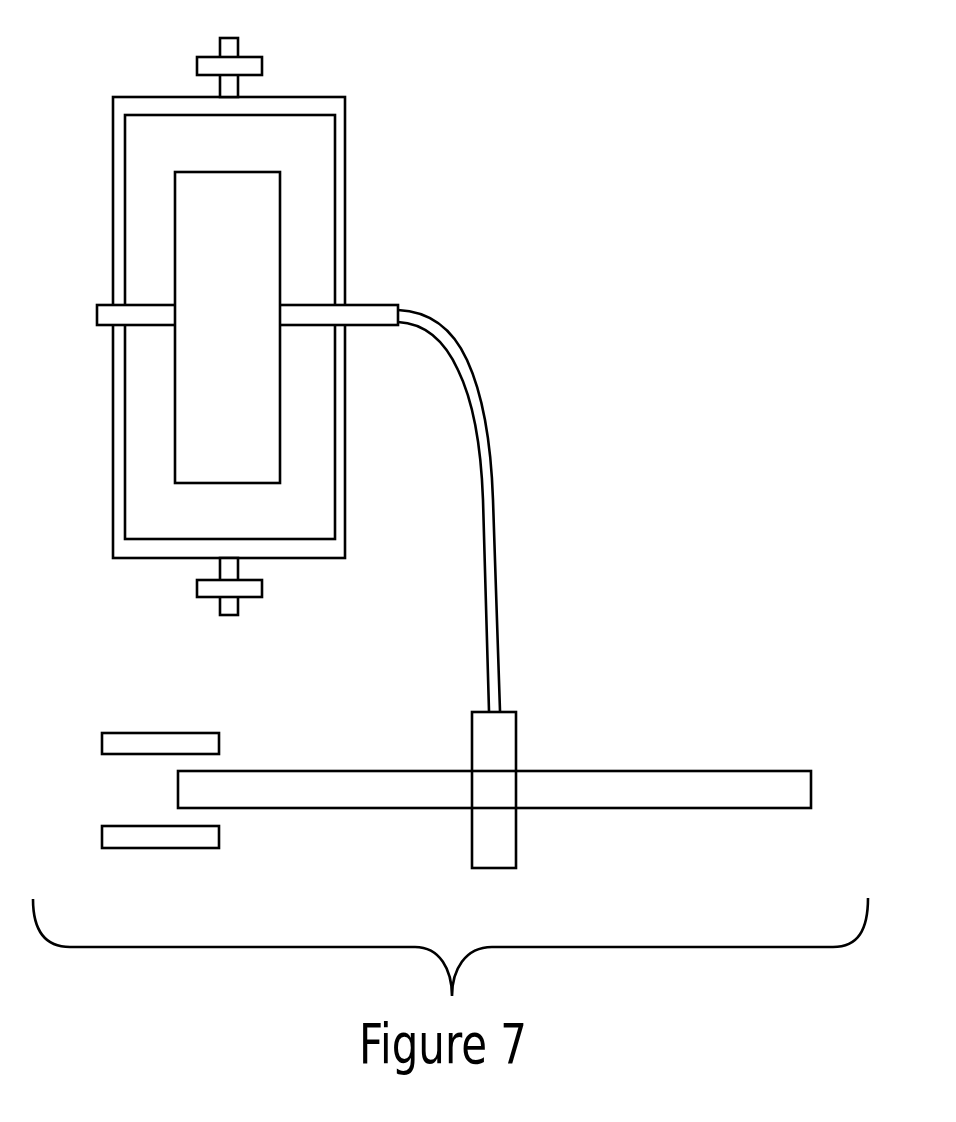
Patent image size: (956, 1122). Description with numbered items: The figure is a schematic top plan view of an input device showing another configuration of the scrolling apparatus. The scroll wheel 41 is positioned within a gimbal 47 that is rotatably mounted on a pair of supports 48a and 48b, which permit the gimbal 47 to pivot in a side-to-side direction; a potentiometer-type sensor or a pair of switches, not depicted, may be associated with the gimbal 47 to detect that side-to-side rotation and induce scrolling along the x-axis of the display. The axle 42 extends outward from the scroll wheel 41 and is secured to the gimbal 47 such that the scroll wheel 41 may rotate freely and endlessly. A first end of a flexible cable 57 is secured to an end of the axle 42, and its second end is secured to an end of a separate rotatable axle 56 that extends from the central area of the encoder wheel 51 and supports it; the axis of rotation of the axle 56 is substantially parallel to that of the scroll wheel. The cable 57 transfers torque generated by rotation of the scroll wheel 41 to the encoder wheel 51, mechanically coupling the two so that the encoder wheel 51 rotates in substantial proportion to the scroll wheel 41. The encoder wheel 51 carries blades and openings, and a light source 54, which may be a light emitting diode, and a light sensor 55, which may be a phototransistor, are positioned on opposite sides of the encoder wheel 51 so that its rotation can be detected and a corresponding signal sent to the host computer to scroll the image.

The scroll wheel 41 is at (232, 185).
The axle 42 is at (366, 316).
The gimbal 47 is at (337, 167).
The support 48a is at (250, 63).
The support 48b is at (248, 588).
The encoder wheel 51 is at (705, 795).
The light source 54 is at (170, 743).
The light sensor 55 is at (162, 837).
The axle 56 is at (505, 730).
The flexible cable 57 is at (492, 461).